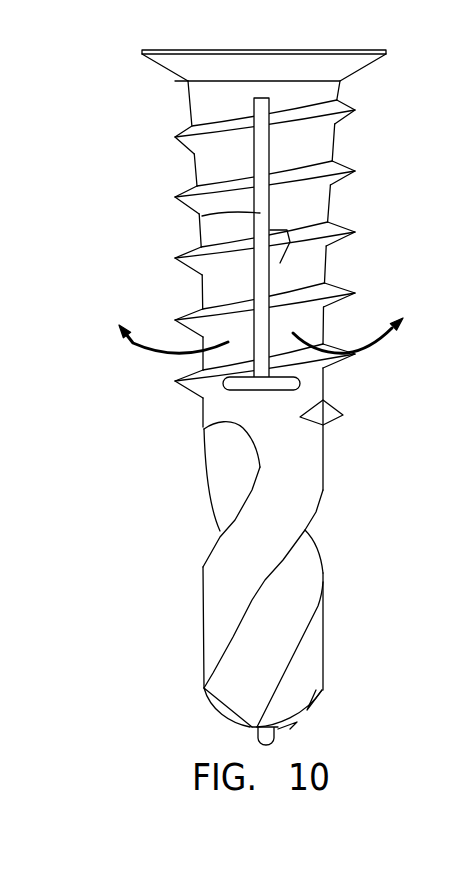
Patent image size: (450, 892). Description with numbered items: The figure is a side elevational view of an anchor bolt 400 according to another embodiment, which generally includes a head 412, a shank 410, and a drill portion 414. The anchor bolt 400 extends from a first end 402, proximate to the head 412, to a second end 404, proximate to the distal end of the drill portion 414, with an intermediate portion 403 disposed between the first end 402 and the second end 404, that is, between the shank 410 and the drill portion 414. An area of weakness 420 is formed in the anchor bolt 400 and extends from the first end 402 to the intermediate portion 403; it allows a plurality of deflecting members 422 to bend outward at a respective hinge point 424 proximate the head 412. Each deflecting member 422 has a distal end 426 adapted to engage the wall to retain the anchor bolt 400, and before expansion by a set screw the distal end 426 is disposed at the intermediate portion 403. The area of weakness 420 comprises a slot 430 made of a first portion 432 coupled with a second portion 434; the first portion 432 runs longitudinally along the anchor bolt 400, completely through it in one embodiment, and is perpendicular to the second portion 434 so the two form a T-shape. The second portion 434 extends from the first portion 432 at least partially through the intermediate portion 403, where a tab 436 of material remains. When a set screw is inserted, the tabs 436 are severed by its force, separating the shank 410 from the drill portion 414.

The anchor bolt 400 is at (116, 473).
The first end 402 is at (338, 88).
The intermediate portion 403 is at (327, 397).
The second end 404 is at (321, 668).
The shank 410 is at (329, 203).
The head 412 is at (370, 73).
The drill portion 414 is at (320, 495).
The area of weakness 420 is at (325, 265).
The deflecting members 422 is at (203, 289).
The hinge point 424 is at (192, 104).
The distal end 426 is at (187, 371).
The slot 430 is at (257, 391).
The first portion 432 is at (212, 226).
The second portion 434 is at (282, 391).
The tab 436 is at (204, 398).